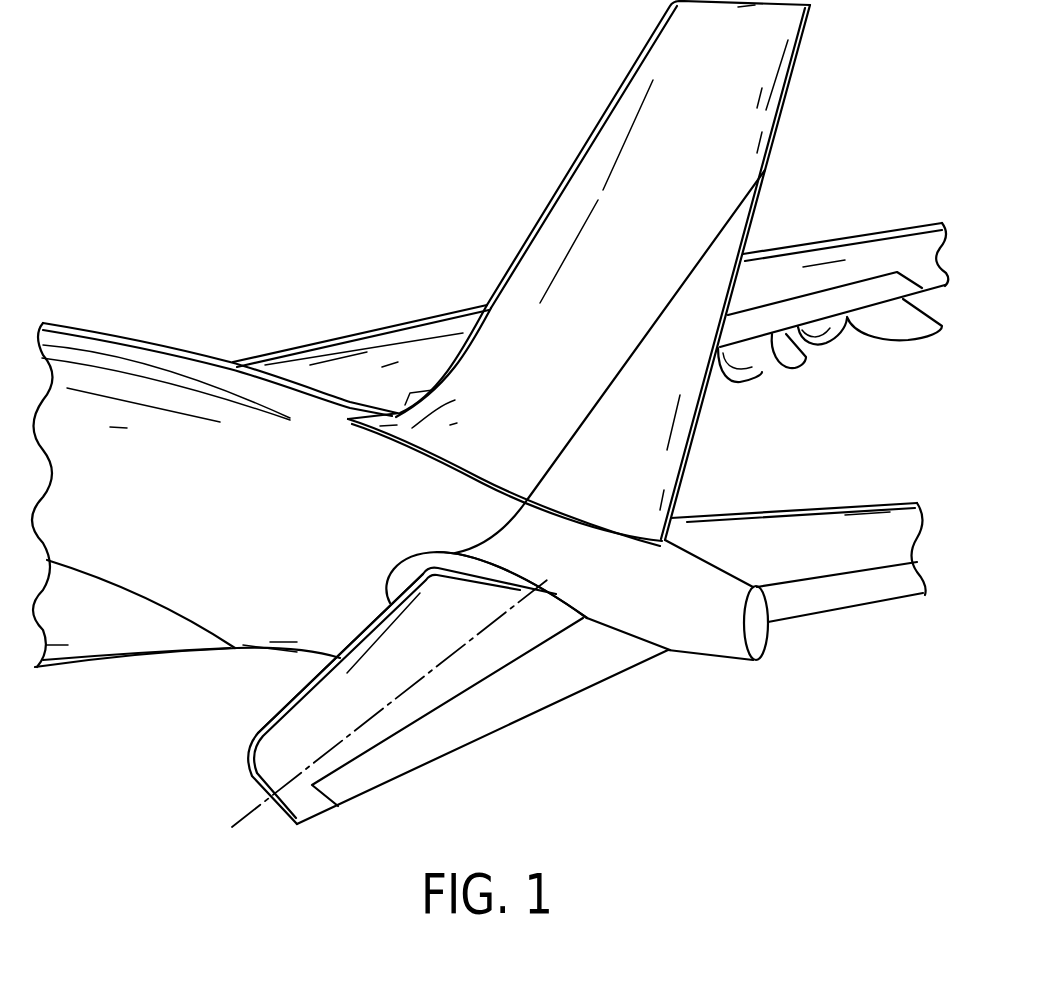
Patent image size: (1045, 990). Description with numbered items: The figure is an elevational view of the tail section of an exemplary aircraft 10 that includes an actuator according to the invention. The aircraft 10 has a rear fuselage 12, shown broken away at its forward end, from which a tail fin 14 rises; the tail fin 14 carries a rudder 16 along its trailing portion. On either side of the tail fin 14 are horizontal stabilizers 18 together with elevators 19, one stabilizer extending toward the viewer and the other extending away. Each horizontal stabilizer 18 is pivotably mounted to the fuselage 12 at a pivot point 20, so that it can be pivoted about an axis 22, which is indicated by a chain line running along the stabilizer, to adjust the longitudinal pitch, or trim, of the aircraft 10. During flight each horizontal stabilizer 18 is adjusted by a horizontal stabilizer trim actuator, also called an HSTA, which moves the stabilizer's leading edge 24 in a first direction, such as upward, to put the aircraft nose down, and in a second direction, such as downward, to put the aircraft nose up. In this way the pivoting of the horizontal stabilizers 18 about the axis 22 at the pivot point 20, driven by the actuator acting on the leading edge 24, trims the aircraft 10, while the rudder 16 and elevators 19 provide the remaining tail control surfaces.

The aircraft 10 is at (236, 190).
The rear fuselage 12 is at (93, 388).
The tail fin 14 is at (760, 68).
The rudder 16 is at (680, 427).
The horizontal stabilizer 18 is at (878, 528).
The elevator 19 is at (870, 587).
The pivot point 20 is at (557, 597).
The axis 22 is at (247, 817).
The leading edge 24 is at (279, 712).